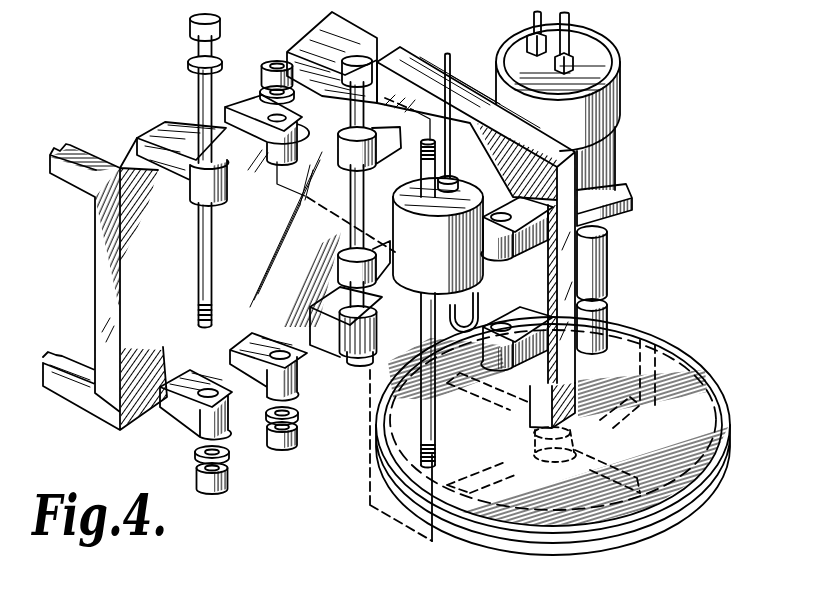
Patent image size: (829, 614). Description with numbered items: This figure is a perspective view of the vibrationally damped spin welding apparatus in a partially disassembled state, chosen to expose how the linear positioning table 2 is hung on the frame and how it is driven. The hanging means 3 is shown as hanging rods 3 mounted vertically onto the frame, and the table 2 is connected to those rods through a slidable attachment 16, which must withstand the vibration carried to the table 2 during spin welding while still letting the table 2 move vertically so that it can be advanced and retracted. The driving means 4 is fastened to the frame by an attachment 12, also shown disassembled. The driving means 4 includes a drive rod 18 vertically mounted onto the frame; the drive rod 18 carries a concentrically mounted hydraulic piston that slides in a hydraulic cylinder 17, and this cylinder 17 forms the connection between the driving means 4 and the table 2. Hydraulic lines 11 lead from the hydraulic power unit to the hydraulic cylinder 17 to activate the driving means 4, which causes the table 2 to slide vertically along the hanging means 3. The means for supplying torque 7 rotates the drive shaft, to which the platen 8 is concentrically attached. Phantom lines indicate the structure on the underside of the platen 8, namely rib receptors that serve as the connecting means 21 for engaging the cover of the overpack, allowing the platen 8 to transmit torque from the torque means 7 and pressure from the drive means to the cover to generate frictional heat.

The linear positioning table 2 is at (400, 60).
The hanging means 3 is at (195, 95).
The driving means 4 is at (378, 318).
The means for supplying torque 7 is at (612, 102).
The platen 8 is at (645, 530).
The hydraulic lines 11 is at (467, 63).
The attachment 12 is at (240, 88).
The slidable attachment 16 is at (610, 298).
The hydraulic cylinder 17 is at (470, 258).
The drive rod 18 is at (421, 413).
The connecting means 21 is at (662, 337).